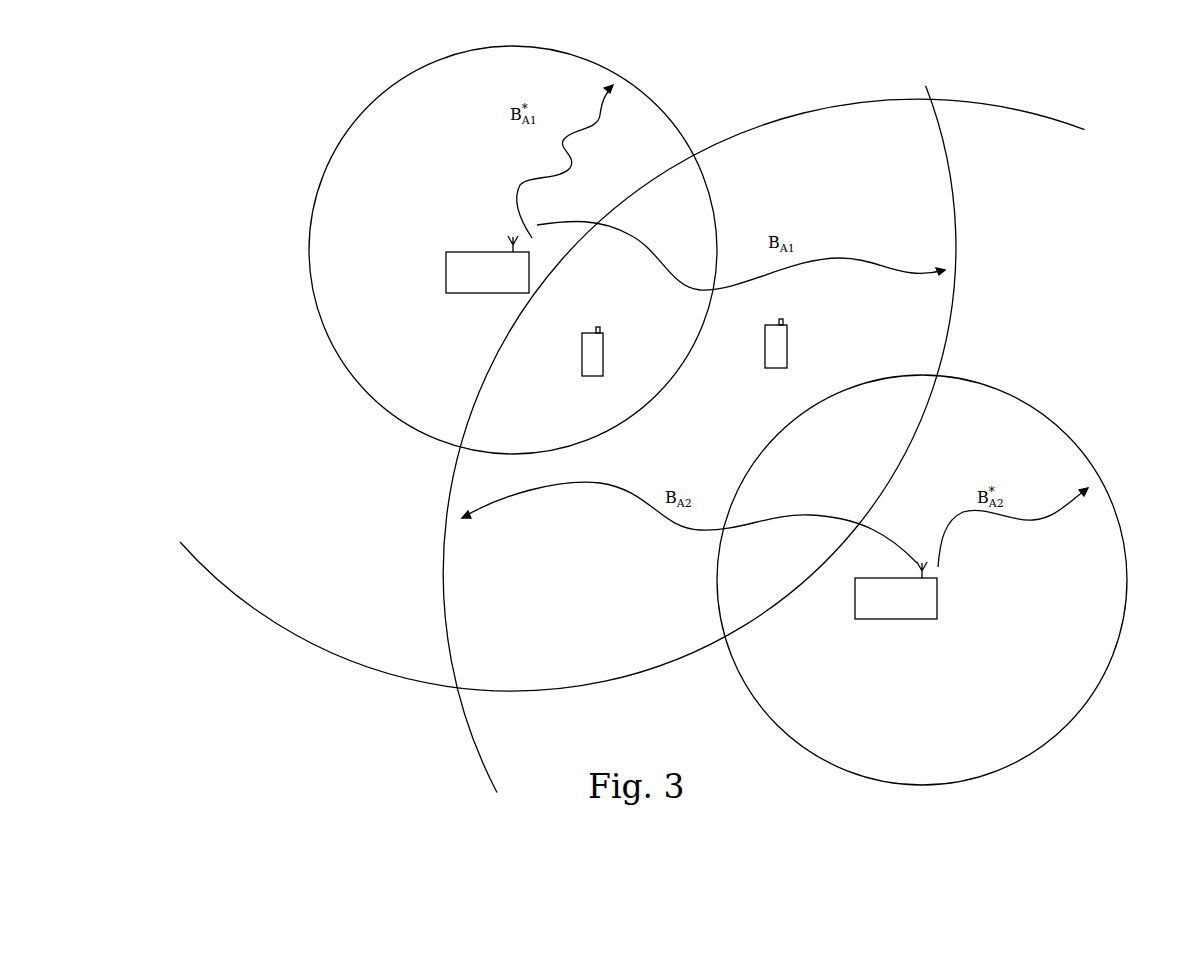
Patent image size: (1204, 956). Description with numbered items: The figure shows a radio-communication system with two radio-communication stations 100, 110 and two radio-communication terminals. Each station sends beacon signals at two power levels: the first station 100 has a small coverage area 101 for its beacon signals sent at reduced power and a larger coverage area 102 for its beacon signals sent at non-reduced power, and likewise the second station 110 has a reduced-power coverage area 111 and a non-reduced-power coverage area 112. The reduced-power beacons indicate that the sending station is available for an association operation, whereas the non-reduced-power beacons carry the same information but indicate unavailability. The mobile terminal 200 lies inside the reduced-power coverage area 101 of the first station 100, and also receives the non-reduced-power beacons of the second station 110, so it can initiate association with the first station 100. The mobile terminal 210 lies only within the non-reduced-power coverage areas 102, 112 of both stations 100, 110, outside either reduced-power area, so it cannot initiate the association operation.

The radio-communication station 100 is at (463, 287).
The coverage area 101 is at (369, 364).
The coverage area 102 is at (951, 235).
The radio-communication station 110 is at (895, 618).
The coverage area 111 is at (1021, 403).
The coverage area 112 is at (756, 124).
The mobile terminal 200 is at (606, 362).
The mobile terminal 210 is at (789, 354).